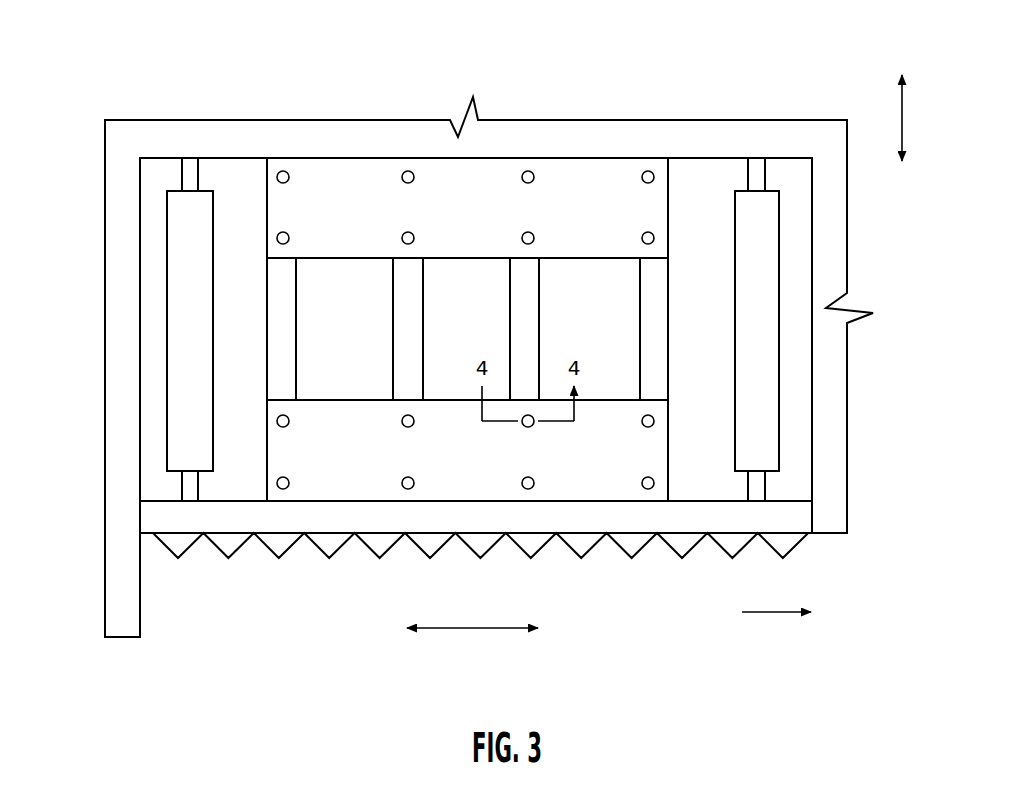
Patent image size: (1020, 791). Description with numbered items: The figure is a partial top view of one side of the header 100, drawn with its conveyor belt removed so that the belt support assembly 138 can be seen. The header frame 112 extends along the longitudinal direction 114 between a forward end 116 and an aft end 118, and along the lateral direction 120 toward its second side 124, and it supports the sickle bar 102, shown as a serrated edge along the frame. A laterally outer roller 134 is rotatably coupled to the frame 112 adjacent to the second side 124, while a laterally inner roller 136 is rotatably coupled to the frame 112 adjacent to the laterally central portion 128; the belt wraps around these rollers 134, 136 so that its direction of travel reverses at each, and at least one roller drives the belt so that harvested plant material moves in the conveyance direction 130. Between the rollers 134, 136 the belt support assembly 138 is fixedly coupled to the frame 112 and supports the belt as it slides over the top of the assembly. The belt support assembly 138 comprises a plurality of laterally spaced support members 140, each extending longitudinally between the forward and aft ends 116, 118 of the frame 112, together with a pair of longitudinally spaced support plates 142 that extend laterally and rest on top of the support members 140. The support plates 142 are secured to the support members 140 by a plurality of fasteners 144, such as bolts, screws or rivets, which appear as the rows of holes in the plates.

The header 100 is at (131, 58).
The sickle bar 102 is at (377, 558).
The header frame 112 is at (747, 130).
The longitudinal direction 114 is at (898, 105).
The forward end 116 is at (262, 611).
The aft end 118 is at (237, 80).
The lateral direction 120 is at (482, 630).
The second side 124 is at (80, 273).
The laterally central portion 128 is at (877, 515).
The conveyance direction 130 is at (770, 614).
The laterally outer roller 134 is at (188, 432).
The laterally inner roller 136 is at (772, 440).
The belt support assembly 138 is at (483, 176).
The support members 140 is at (397, 294).
The support plates 142 is at (438, 178).
The fasteners 144 is at (403, 182).